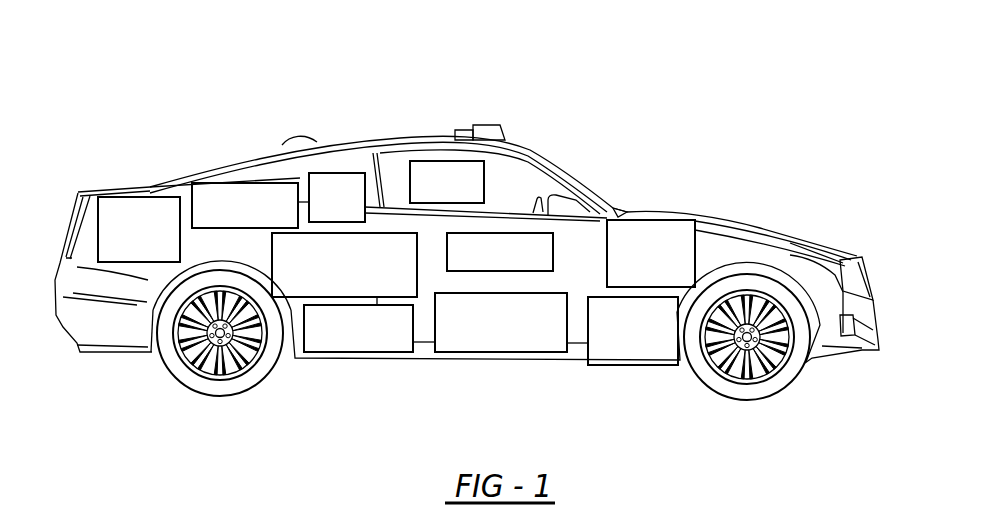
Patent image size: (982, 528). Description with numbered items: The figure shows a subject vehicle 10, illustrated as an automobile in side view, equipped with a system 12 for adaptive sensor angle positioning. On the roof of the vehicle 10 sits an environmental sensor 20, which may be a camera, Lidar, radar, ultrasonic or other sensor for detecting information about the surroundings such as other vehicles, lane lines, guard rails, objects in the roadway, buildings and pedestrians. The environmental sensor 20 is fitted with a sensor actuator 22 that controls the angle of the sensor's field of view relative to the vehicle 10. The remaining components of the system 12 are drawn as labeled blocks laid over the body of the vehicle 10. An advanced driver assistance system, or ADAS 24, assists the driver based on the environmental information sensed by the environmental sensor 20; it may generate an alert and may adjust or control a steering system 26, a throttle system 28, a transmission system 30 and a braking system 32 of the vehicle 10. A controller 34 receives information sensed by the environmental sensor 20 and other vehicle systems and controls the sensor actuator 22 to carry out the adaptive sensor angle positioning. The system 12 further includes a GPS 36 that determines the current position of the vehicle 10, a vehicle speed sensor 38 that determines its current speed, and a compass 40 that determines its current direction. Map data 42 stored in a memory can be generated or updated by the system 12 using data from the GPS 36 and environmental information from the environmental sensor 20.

The vehicle 10 is at (246, 72).
The system 12 is at (630, 182).
The environmental sensor 20 is at (490, 125).
The sensor actuator 22 is at (455, 132).
The advanced driver assistance system (ADAS) 24 is at (485, 180).
The steering system 26 is at (697, 253).
The throttle system 28 is at (662, 365).
The transmission system 30 is at (523, 352).
The braking system 32 is at (167, 197).
The controller 34 is at (503, 233).
The global positioning system (GPS) 36 is at (333, 173).
The vehicle speed sensor 38 is at (293, 298).
The compass 40 is at (230, 183).
The map data 42 is at (323, 352).